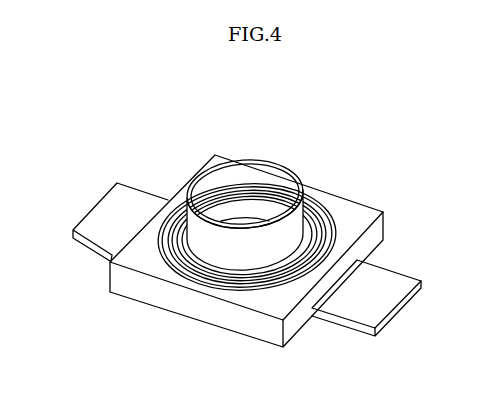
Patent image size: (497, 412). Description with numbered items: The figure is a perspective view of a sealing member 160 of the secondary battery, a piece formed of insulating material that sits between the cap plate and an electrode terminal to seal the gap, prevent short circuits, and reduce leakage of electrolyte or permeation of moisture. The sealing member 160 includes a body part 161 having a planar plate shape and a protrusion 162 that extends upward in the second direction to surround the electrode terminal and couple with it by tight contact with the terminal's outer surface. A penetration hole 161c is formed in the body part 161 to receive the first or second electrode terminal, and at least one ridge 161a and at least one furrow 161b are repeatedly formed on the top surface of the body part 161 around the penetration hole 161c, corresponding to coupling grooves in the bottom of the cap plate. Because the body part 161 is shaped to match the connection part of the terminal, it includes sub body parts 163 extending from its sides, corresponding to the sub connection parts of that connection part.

The sealing member 160 is at (92, 130).
The body part 161 is at (247, 300).
The ridge 161a is at (313, 212).
The furrow 161b is at (330, 237).
The penetration hole 161c is at (233, 207).
The protrusion 162 is at (263, 187).
The sub body part 163 is at (383, 302).